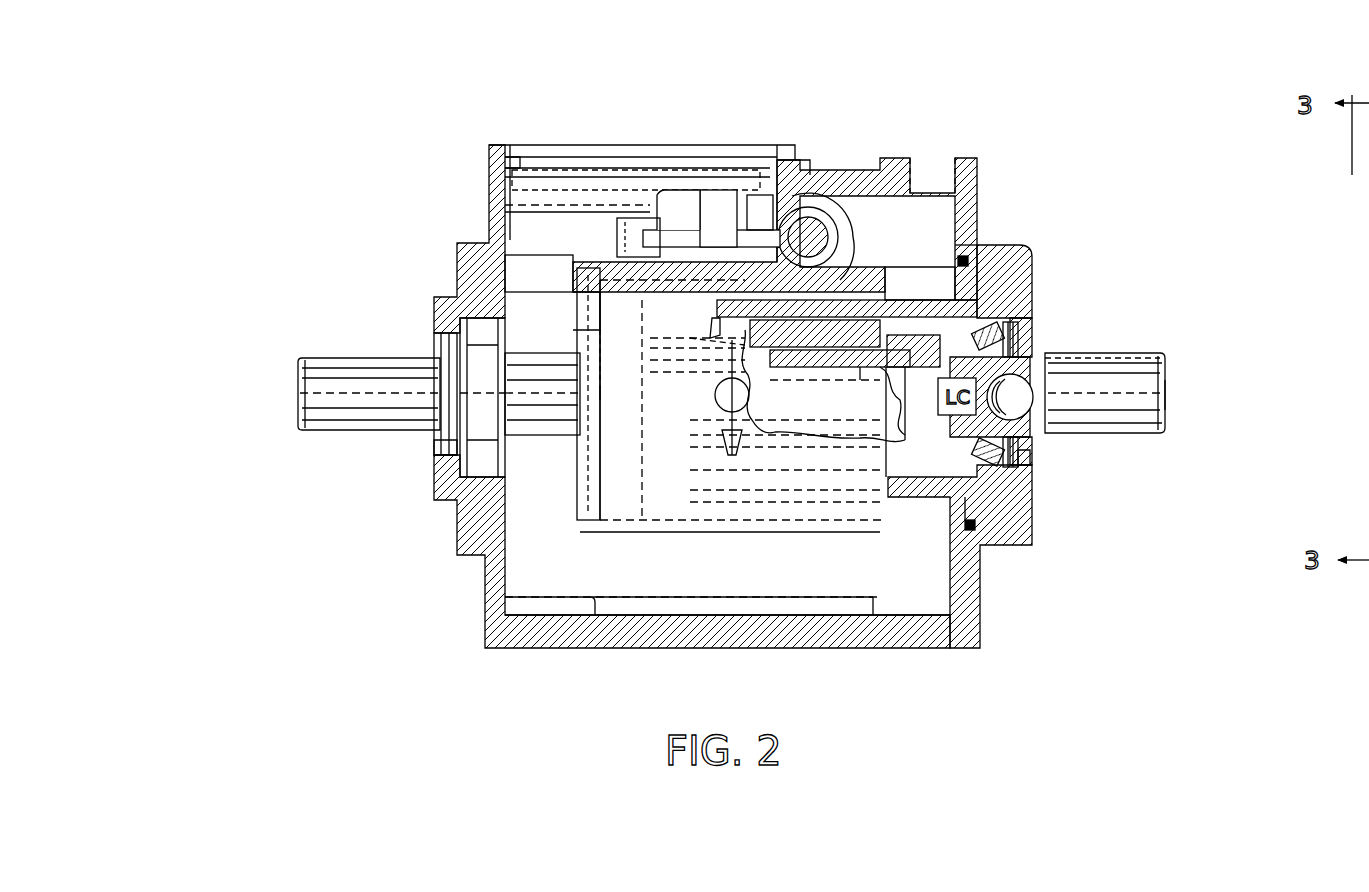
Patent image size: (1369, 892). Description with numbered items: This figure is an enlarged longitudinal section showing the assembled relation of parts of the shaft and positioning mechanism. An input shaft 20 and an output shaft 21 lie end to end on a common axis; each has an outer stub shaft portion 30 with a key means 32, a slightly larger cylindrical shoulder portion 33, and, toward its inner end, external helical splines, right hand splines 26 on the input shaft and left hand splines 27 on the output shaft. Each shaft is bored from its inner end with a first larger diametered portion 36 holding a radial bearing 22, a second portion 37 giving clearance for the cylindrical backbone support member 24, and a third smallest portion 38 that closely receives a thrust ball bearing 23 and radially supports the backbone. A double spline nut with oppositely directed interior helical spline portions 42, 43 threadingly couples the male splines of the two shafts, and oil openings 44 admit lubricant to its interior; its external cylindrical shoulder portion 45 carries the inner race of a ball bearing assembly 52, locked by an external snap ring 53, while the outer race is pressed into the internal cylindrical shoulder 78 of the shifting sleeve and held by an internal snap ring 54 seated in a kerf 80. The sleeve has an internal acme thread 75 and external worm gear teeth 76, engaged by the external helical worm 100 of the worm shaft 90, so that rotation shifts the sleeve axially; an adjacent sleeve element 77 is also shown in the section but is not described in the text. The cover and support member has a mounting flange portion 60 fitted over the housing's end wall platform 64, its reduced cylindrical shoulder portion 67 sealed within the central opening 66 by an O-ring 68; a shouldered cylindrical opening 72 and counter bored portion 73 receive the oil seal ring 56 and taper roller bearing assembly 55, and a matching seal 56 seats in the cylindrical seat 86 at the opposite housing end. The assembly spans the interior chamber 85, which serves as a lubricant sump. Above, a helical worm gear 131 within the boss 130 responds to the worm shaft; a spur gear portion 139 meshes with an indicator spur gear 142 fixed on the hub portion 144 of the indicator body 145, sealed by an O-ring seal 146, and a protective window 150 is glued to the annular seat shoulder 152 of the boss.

The input shaft 20 is at (1183, 393).
The output shaft 21 is at (290, 390).
The radial bearing 22 is at (780, 378).
The thrust ball bearing 23 is at (1035, 432).
The backbone support member 24 is at (888, 416).
The right hand helical splines 26 is at (895, 347).
The left hand helical splines 27 is at (717, 349).
The stub shaft portion 30 is at (1118, 413).
The key means 32 is at (1157, 353).
The cylindrical shoulder portion 33 is at (1063, 353).
The first larger diametered bore portion 36 is at (780, 370).
The second smaller diametered bore portion 37 is at (830, 373).
The third smallest diametered bore portion 38 is at (935, 388).
The interior helical spline portion 42 is at (872, 368).
The interior helical spline portion 43 is at (717, 400).
The oil openings 44 is at (718, 325).
The external cylindrical shoulder portion 45 is at (635, 335).
The ball bearing assembly 52 is at (628, 380).
The external snap ring 53 is at (597, 352).
The internal snap ring 54 is at (590, 352).
The taper roller bearing assembly 55 is at (492, 423).
The oil seal ring 56 is at (437, 352).
The mounting flange portion 60 is at (1028, 247).
The end wall platform 64 is at (972, 253).
The central opening 66 is at (957, 262).
The reduced cylindrical shoulder portion 67 is at (973, 512).
The O-ring 68 is at (968, 263).
The shouldered cylindrical opening 72 is at (1025, 340).
The counter bored portion 73 is at (1020, 318).
The internal acme thread 75 is at (883, 277).
The worm gear teeth 76 is at (858, 240).
The swash plate 77 is at (612, 262).
The internal cylindrical shoulder 78 is at (625, 340).
The kerf 80 is at (590, 306).
The interior chamber 85 is at (750, 586).
The cylindrical seat 86 is at (435, 450).
The worm 90 is at (828, 238).
The external helical worm 100 is at (868, 157).
The boss 130 is at (487, 205).
The helical worm gear 131 is at (640, 238).
The spur gear portion 139 is at (790, 182).
The indicator spur gear 142 is at (668, 200).
The hub portion 144 is at (690, 215).
The indicator body 145 is at (545, 196).
The O-ring seal 146 is at (513, 178).
The protective window 150 is at (587, 144).
The annular seat shoulder 152 is at (812, 180).